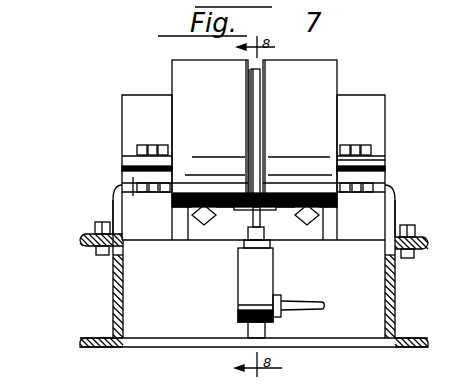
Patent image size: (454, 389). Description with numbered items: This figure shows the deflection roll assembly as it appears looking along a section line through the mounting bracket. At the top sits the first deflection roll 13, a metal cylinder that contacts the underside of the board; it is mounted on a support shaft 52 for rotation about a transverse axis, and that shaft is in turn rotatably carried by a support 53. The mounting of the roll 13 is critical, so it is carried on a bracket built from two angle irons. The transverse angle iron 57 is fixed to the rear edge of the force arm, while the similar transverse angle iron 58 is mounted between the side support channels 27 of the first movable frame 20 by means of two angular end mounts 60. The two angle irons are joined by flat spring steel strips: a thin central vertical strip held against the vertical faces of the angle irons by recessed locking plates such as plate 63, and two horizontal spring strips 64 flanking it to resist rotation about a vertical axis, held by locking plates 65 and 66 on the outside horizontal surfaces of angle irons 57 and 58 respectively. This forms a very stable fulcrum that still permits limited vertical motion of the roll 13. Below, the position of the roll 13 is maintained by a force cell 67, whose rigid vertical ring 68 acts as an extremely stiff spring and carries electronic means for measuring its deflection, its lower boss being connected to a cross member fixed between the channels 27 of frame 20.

The first deflection roll 13 is at (172, 73).
The support 53 is at (255, 96).
The support shaft 52 is at (262, 133).
The transverse angle iron 57 is at (122, 112).
The horizontal spring strips 64 is at (122, 168).
The locking plate 65 is at (378, 158).
The locking plate 66 is at (378, 176).
The angular end mounts 60 is at (113, 195).
The transverse angle iron 58 is at (168, 238).
The locking plate 63 is at (238, 236).
The first movable frame 20 is at (113, 279).
The side support channels 27 is at (97, 338).
The force cell 67 is at (238, 277).
The vertical ring 68 is at (238, 300).